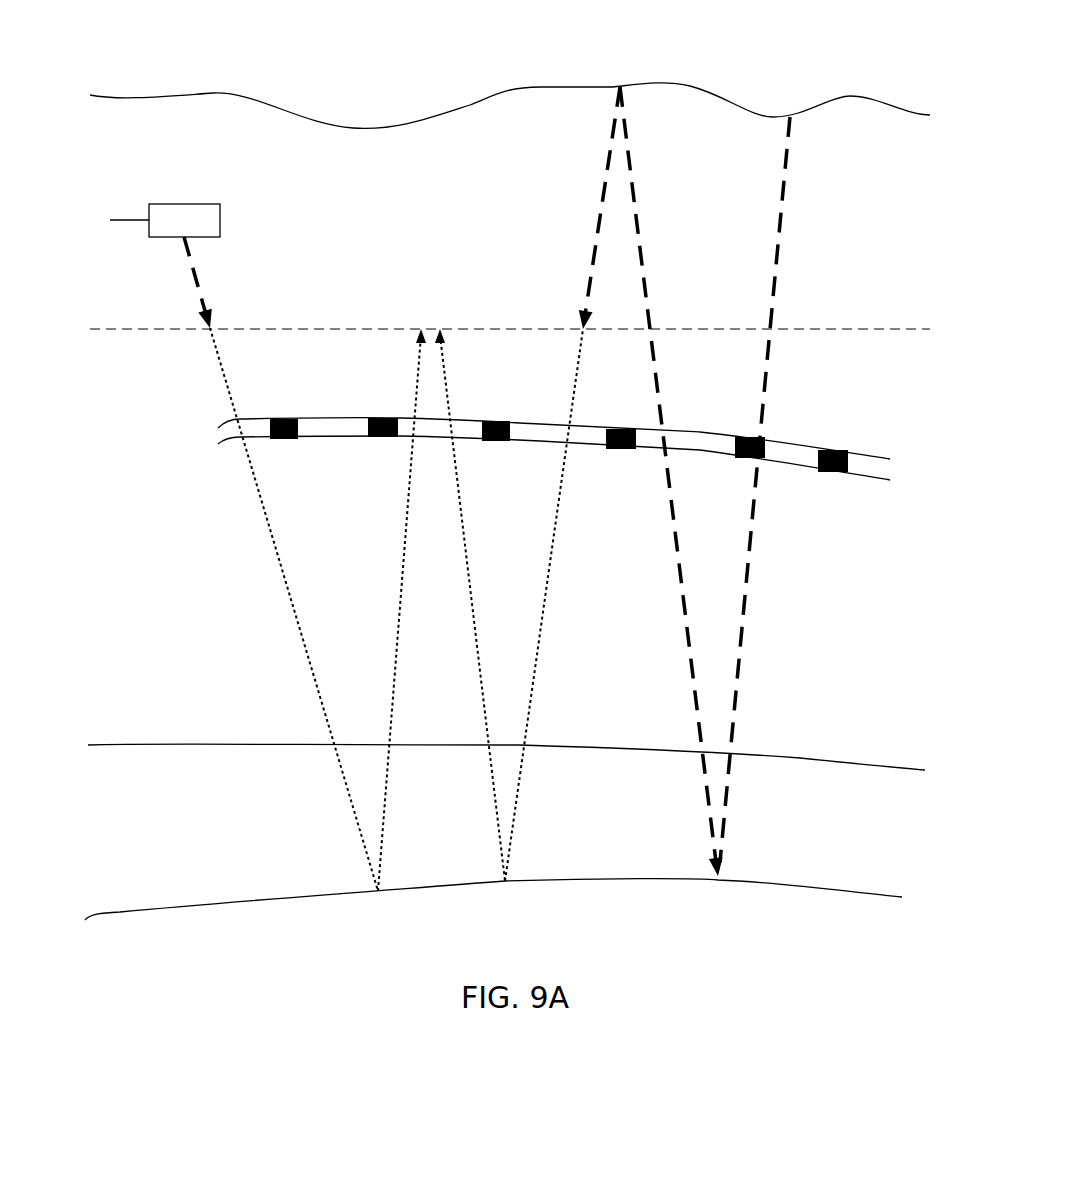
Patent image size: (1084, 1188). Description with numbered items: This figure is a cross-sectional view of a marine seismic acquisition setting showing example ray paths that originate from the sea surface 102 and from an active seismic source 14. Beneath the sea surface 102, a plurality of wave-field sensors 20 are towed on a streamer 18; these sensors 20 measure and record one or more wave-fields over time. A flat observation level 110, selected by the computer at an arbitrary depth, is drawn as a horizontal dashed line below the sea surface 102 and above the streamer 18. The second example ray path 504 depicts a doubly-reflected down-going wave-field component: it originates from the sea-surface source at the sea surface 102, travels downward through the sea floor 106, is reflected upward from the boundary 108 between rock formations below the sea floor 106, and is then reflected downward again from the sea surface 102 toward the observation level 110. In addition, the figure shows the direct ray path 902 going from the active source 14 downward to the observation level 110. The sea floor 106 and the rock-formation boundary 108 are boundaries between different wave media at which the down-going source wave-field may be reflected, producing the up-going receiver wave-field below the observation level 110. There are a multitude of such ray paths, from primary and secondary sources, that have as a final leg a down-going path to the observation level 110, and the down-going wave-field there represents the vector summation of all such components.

The sea surface 102 is at (632, 88).
The seismic source 14 is at (165, 220).
The direct ray path 902 is at (192, 262).
The observation level 110 is at (838, 330).
The second example ray path 504 is at (782, 187).
The streamer 18 is at (695, 445).
The wave-field sensors 20 is at (285, 418).
The sea floor 106 is at (800, 758).
The boundary between rock formations 108 is at (750, 887).